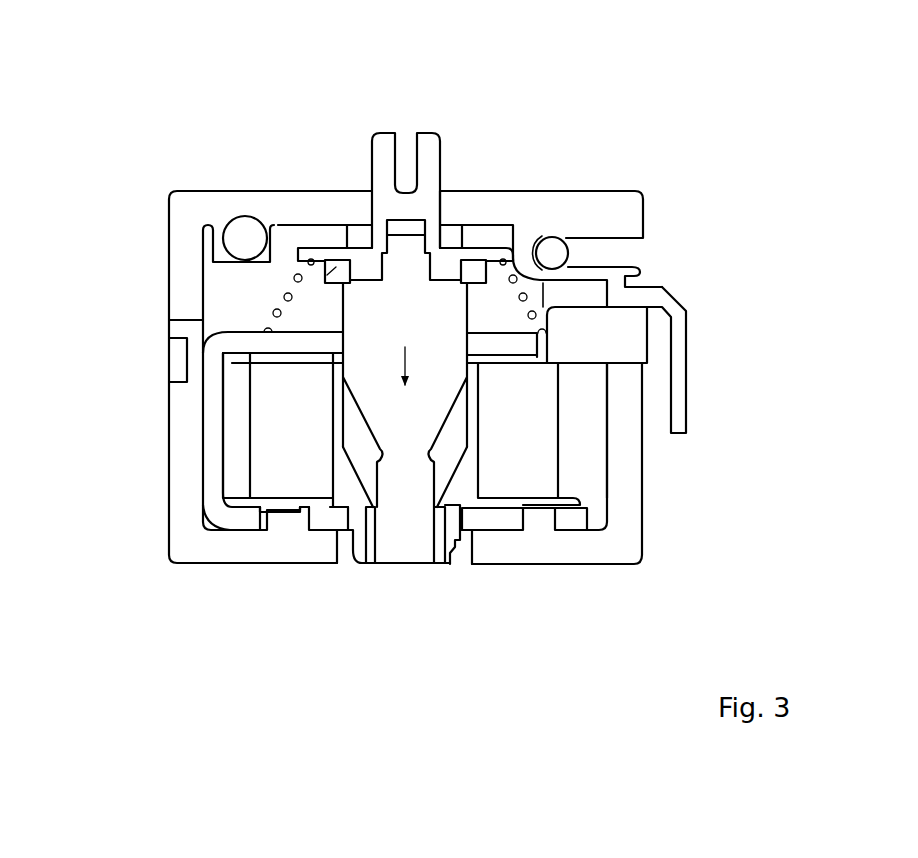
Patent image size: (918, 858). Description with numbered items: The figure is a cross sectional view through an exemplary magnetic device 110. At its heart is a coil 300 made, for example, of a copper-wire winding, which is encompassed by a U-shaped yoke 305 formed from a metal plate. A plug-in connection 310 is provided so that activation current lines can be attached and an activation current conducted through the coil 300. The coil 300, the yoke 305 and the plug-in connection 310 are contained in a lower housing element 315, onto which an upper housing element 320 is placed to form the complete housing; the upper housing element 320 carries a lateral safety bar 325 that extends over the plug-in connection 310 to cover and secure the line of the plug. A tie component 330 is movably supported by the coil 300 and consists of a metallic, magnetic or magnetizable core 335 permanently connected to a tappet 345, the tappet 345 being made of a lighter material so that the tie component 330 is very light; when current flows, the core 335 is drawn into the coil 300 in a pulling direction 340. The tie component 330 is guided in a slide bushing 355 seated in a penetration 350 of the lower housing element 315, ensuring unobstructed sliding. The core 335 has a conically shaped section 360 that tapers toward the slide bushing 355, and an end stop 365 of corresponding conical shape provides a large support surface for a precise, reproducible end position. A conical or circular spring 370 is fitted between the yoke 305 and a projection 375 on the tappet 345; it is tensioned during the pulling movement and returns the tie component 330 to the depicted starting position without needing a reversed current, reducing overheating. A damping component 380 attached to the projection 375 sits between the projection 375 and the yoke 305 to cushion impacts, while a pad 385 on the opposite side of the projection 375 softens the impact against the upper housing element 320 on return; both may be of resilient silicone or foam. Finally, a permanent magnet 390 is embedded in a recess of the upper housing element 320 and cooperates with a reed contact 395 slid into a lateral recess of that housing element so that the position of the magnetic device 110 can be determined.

The magnetic device 110 is at (580, 128).
The coil 300 is at (527, 462).
The yoke 305 is at (210, 437).
The plug-in connection 310 is at (615, 348).
The lower housing element 315 is at (183, 398).
The upper housing element 320 is at (212, 183).
The lateral safety bar 325 is at (687, 373).
The tie component 330 is at (411, 126).
The core 335 is at (437, 318).
The pulling direction 340 is at (403, 362).
The tappet 345 is at (430, 143).
The penetration 350 is at (438, 585).
The slide bushing 355 is at (370, 573).
The section with a conical shape 360 is at (447, 442).
The end stop 365 is at (357, 478).
The spring 370 is at (273, 310).
The projection 375 is at (327, 247).
The damping component 380 is at (330, 272).
The pad 385 is at (362, 235).
The permanent magnet 390 is at (245, 234).
The reed contact 395 is at (549, 234).